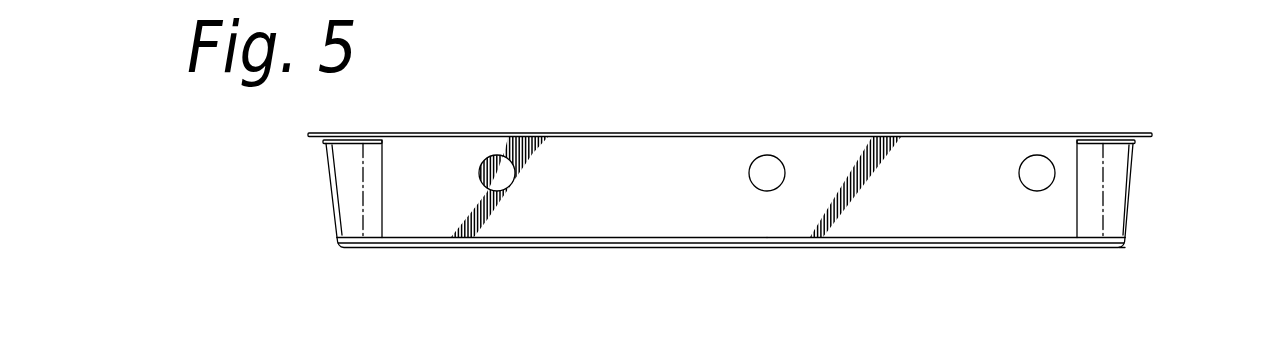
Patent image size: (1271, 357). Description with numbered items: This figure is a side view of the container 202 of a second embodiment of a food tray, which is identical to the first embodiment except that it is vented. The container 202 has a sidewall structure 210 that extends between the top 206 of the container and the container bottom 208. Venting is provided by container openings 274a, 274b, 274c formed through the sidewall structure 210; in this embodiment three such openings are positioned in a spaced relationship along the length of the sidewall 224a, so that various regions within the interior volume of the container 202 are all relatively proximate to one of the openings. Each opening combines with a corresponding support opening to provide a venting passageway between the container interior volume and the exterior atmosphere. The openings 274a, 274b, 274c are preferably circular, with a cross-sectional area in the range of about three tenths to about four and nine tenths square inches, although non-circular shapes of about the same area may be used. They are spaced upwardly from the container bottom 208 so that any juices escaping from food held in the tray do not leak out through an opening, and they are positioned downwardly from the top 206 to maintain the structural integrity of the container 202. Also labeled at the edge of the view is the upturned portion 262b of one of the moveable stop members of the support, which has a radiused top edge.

The container 202 is at (1164, 103).
The top 206 is at (418, 133).
The container bottom 208 is at (863, 248).
The sidewall structure 210 is at (528, 227).
The sidewall 224a is at (1008, 227).
The container opening 274a is at (495, 167).
The container opening 274b is at (767, 167).
The container opening 274c is at (1031, 167).
The upturned portion 262b is at (1136, 303).